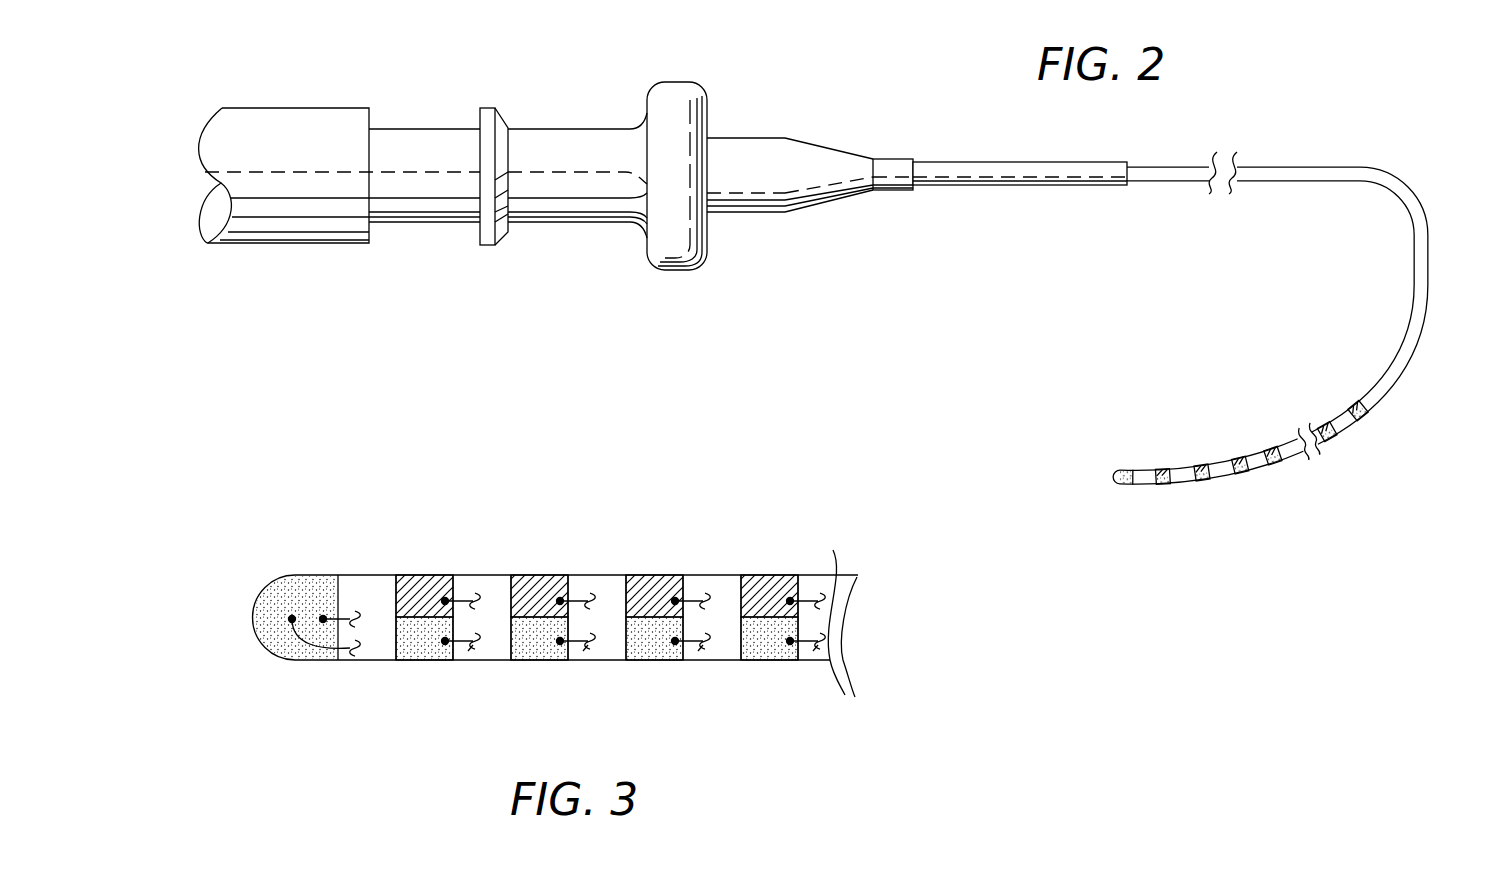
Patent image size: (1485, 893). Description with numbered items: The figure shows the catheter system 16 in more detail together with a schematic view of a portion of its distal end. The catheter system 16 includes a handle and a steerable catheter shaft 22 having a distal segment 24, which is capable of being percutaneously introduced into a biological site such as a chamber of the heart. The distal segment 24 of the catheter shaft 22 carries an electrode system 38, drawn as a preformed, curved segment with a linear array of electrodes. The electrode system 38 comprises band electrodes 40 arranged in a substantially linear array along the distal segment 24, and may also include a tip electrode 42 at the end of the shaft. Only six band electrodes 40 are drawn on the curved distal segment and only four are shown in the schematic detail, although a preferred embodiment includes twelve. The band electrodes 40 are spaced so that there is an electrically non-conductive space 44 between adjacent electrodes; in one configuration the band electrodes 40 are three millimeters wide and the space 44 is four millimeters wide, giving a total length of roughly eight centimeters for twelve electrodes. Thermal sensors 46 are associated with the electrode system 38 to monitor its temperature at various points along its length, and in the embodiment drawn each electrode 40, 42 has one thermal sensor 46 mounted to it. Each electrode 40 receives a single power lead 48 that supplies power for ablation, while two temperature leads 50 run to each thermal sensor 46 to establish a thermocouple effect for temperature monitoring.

In FIG. 2, the catheter system 16 is at (850, 124).
In FIG. 2, the steerable catheter shaft 22 is at (1422, 248).
In FIG. 2, the distal segment 24 is at (1288, 492).
In FIG. 2, the electrode system 38 is at (1120, 388).
In FIG. 3, the electrode system 38 is at (905, 487).
In FIG. 2, the band electrodes 40 is at (1273, 450).
In FIG. 3, the band electrodes 40 is at (436, 593).
In FIG. 2, the tip electrode 42 is at (1118, 480).
In FIG. 3, the tip electrode 42 is at (295, 577).
In FIG. 3, the electrically non-conductive space 44 is at (385, 575).
In FIG. 3, the thermal sensors 46 is at (292, 619).
In FIG. 3, the power lead 48 is at (347, 617).
In FIG. 3, the temperature leads 50 is at (353, 650).